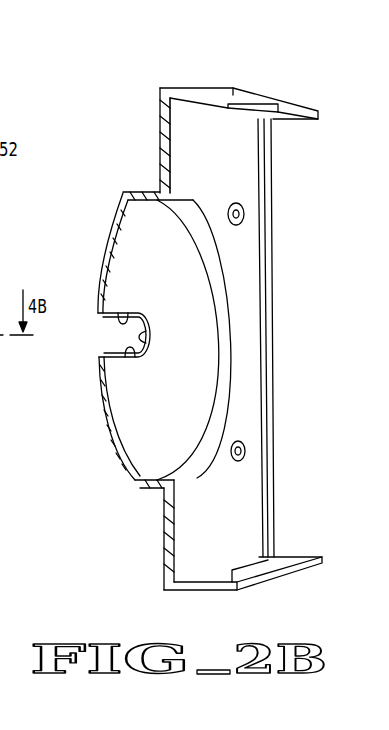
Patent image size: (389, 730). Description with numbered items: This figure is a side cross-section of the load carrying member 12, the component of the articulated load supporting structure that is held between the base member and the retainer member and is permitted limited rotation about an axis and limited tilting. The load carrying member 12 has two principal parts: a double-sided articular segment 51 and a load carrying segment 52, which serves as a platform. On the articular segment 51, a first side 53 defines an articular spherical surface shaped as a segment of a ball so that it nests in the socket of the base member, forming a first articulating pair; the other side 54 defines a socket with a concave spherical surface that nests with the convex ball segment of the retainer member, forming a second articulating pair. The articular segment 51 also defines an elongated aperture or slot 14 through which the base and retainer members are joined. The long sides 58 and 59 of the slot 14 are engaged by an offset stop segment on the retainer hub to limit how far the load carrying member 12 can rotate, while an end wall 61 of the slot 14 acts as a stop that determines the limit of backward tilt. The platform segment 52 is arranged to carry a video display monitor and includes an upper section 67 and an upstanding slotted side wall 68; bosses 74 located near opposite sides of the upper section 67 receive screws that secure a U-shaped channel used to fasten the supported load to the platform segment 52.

The load carrying member 12 is at (253, 85).
The elongated aperture or slot 14 is at (112, 334).
The double-sided articular segment 51 is at (133, 487).
The load carrying segment 52 is at (162, 92).
The first side 53 is at (110, 232).
The other side 54 is at (140, 205).
The long side 58 is at (127, 310).
The long side 59 is at (132, 359).
The end wall 61 is at (151, 337).
The upper section 67 is at (225, 161).
The upstanding slotted side wall 68 is at (302, 565).
The boss 74 is at (242, 226).